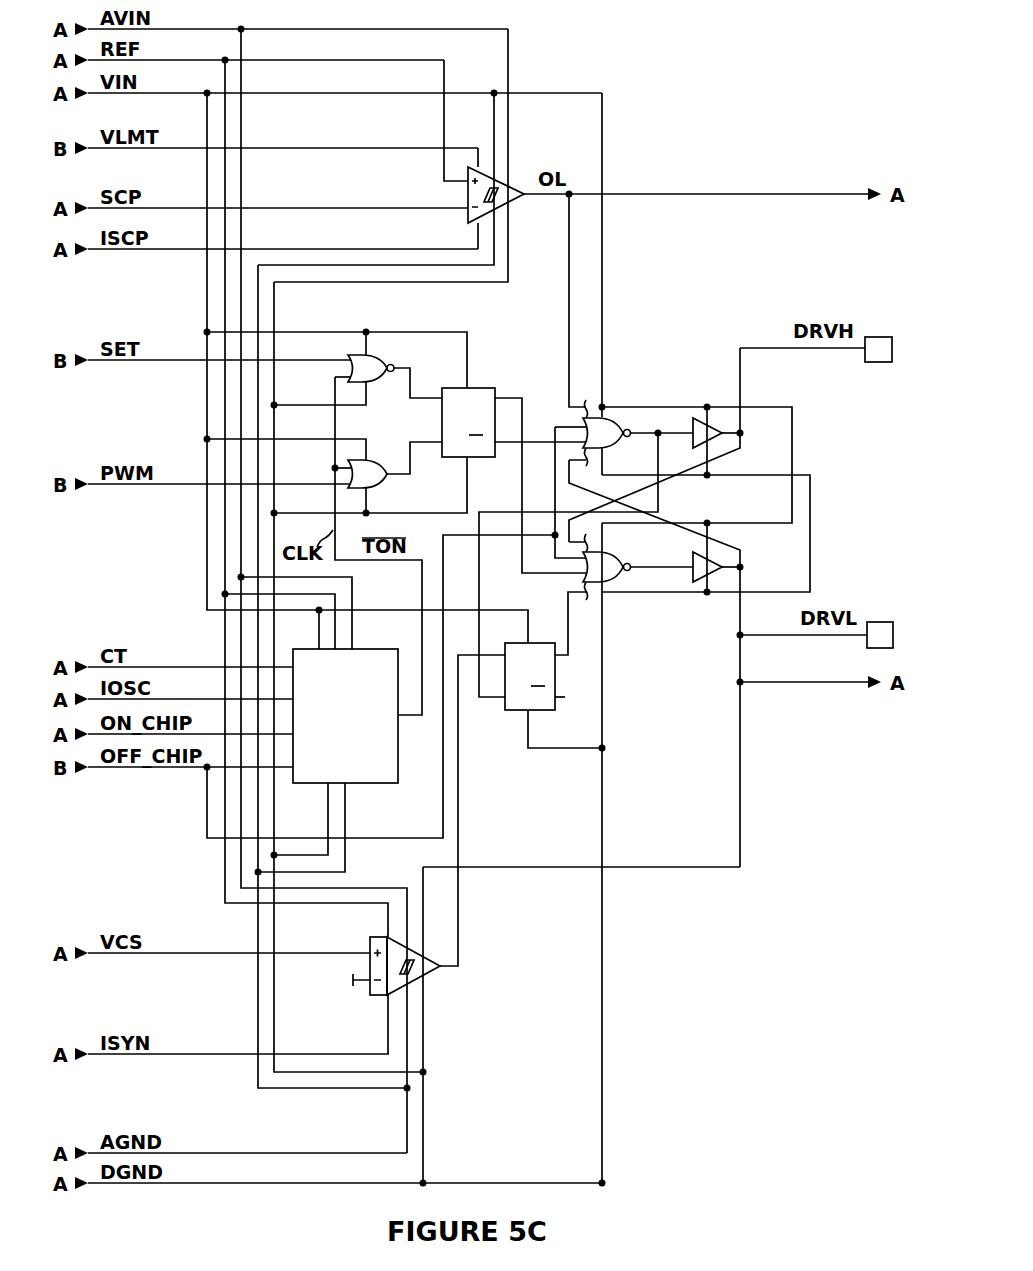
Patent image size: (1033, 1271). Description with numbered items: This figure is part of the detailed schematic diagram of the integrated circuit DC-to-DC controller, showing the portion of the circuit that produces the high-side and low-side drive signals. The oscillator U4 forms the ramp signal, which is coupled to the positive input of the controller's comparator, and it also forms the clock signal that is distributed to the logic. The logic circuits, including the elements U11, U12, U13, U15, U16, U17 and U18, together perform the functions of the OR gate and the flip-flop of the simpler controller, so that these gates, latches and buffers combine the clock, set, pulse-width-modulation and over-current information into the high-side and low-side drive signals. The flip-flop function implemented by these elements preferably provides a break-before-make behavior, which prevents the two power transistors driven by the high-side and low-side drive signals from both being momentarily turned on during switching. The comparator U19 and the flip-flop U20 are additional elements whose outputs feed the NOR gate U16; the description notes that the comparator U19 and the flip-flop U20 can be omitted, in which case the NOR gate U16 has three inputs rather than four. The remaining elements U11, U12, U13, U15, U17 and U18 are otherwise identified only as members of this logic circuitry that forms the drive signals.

The oscillator U4 is at (373, 789).
The logic circuit element U11 is at (373, 458).
The logic circuit element U12 is at (375, 351).
The logic circuit element U13 is at (482, 386).
The logic circuit element U15 is at (613, 419).
The NOR gate U16 is at (617, 560).
The logic circuit element U17 is at (725, 405).
The logic circuit element U18 is at (721, 560).
The comparator U19 is at (366, 946).
The flip-flop U20 is at (509, 714).